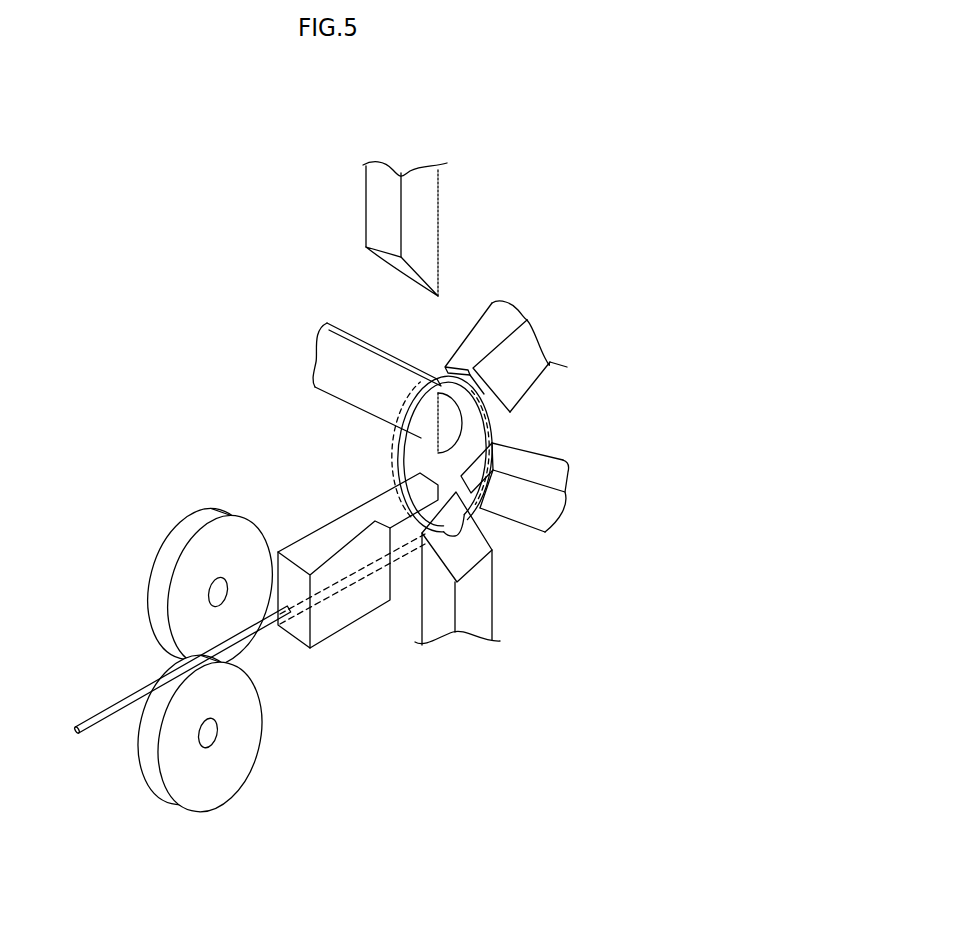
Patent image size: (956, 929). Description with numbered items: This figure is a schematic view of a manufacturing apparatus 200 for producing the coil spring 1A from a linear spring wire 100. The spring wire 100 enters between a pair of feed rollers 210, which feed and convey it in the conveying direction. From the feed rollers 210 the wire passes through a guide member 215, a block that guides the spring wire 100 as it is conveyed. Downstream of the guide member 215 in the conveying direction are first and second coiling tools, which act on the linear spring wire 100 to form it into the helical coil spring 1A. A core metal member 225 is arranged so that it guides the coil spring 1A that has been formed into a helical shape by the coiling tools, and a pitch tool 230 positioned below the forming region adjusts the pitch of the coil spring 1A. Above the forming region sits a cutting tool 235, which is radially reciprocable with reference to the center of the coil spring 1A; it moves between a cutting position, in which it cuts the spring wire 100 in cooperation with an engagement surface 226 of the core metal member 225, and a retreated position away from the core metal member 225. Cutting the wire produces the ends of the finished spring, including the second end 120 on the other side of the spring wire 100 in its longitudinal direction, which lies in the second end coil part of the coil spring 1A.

The spring wire 100 is at (92, 737).
The second end 120 is at (455, 548).
The coil spring 1A is at (382, 473).
The manufacturing apparatus 200 is at (647, 192).
The feed rollers 210 is at (167, 557).
The guide member 215 is at (323, 620).
The core metal member 225 is at (305, 312).
The engagement surface 226 is at (327, 368).
The pitch tool 230 is at (472, 622).
The cutting tool 235 is at (423, 220).